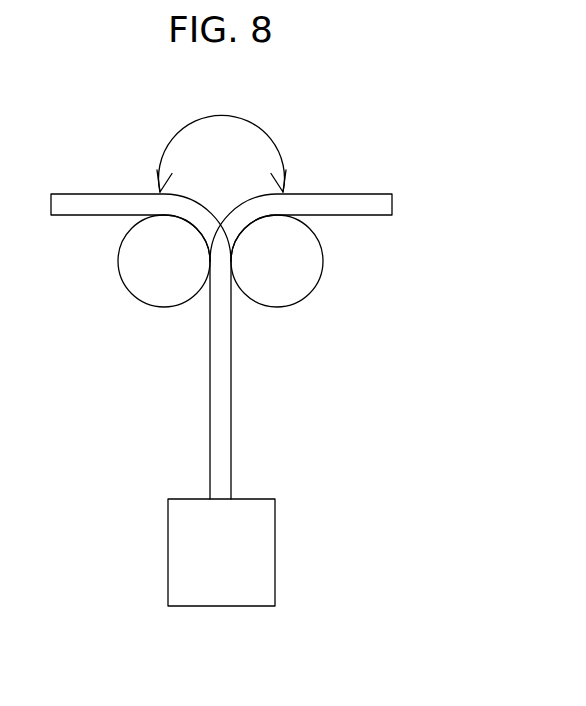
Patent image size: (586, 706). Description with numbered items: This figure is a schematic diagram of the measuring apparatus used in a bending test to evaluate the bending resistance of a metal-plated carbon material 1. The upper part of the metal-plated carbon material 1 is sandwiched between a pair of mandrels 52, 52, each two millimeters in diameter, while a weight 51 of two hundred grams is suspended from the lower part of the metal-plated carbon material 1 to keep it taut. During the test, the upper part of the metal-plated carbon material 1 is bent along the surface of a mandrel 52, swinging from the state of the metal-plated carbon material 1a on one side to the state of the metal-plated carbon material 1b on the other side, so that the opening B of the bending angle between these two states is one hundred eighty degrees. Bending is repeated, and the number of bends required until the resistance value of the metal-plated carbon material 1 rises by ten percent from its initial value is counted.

The metal-plated carbon material 1 is at (230, 311).
The metal-plated carbon material in first bent state 1a is at (72, 203).
The metal-plated carbon material in second bent state 1b is at (359, 202).
The weight 51 is at (262, 542).
The mandrels 52 is at (122, 272).
The opening of bending angle B is at (231, 144).